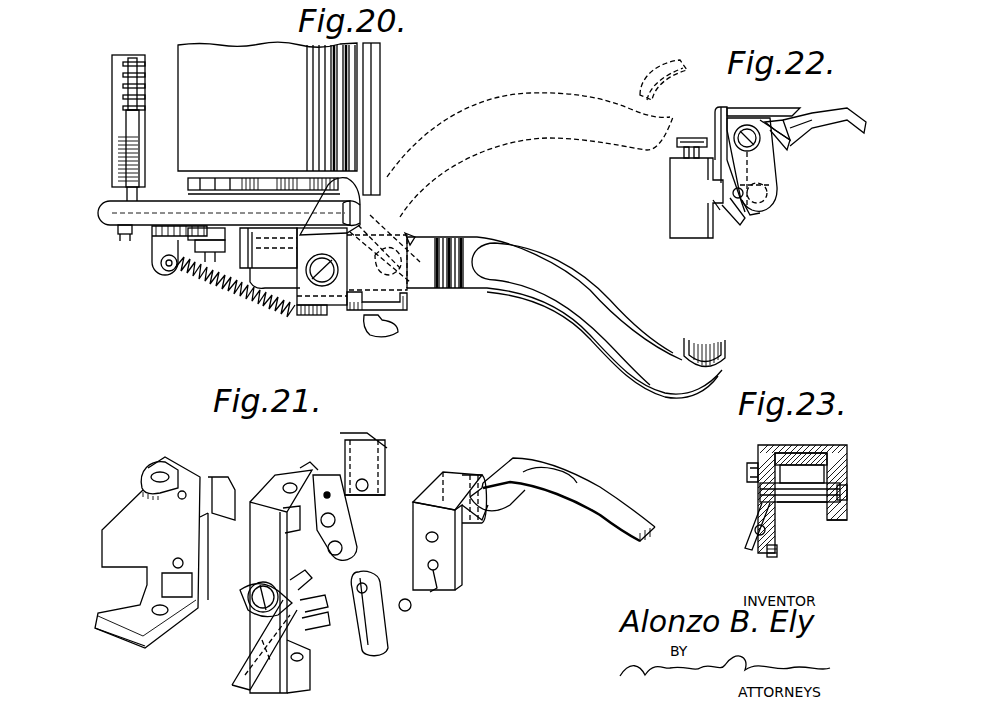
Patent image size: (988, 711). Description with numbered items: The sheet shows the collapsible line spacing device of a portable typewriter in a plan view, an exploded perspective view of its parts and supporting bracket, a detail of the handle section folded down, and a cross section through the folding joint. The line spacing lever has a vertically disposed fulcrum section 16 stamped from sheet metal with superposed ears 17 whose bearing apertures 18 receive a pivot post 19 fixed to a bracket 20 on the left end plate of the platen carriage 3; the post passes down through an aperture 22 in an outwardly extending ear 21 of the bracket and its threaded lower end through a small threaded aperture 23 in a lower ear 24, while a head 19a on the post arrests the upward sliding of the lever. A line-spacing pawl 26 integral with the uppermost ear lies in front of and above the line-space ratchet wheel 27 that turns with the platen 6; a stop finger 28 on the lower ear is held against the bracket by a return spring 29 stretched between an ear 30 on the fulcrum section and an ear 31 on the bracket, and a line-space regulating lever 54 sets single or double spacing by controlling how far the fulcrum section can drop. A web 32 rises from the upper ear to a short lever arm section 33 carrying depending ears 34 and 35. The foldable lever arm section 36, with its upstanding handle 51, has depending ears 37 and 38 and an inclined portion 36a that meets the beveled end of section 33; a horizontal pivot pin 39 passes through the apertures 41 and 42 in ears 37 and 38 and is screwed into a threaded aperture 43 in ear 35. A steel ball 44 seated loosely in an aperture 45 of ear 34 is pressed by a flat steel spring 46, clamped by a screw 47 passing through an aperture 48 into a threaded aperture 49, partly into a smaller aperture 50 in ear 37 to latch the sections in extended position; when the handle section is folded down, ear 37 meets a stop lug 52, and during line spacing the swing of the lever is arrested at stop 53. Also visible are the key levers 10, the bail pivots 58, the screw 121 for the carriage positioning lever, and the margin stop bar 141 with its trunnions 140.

In FIG. 20, the platen carriage 3 is at (363, 97).
In FIG. 20, the platen 6 is at (195, 88).
In FIG. 21, the key lever 10 is at (336, 520).
In FIG. 22, the fulcrum section 16 is at (670, 196).
In FIG. 21, the fulcrum section 16 is at (272, 546).
In FIG. 20, the laterally extending ears 17 is at (310, 308).
In FIG. 21, the laterally extending ears 17 is at (270, 490).
In FIG. 21, the bearing apertures 18 is at (289, 482).
In FIG. 22, the pivot post 19 is at (677, 150).
In FIG. 20, the head 19a is at (341, 312).
In FIG. 22, the head 19a is at (670, 140).
In FIG. 21, the bracket 20 is at (140, 518).
In FIG. 21, the outwardly extending ear 21 is at (174, 460).
In FIG. 21, the aperture 22 is at (152, 472).
In FIG. 22, the small threaded aperture 23 is at (745, 125).
In FIG. 21, the small threaded aperture 23 is at (165, 616).
In FIG. 21, the ear 24 is at (142, 640).
In FIG. 20, the line-spacing pawl 26 is at (352, 193).
In FIG. 20, the line-space ratchet wheel 27 is at (218, 180).
In FIG. 20, the stop finger 28 is at (266, 285).
In FIG. 21, the stop finger 28 is at (250, 620).
In FIG. 20, the return spring 29 is at (233, 300).
In FIG. 21, the ear 30 is at (250, 615).
In FIG. 20, the ear 31 is at (185, 276).
In FIG. 21, the web 32 is at (310, 468).
In FIG. 20, the lever arm section 33 is at (423, 288).
In FIG. 22, the lever arm section 33 is at (778, 110).
In FIG. 21, the lever arm section 33 is at (385, 455).
In FIG. 23, the lever arm section 33 is at (762, 446).
In FIG. 22, the depending ear 34 is at (722, 181).
In FIG. 21, the depending ear 34 is at (356, 540).
In FIG. 23, the depending ear 34 is at (755, 552).
In FIG. 21, the depending ear 35 is at (370, 490).
In FIG. 23, the depending ear 35 is at (840, 520).
In FIG. 20, the foldable lever arm section 36 is at (568, 279).
In FIG. 22, the foldable lever arm section 36 is at (840, 110).
In FIG. 21, the foldable lever arm section 36 is at (433, 470).
In FIG. 23, the foldable lever arm section 36 is at (803, 458).
In FIG. 20, the inclined portion 36a is at (446, 237).
In FIG. 22, the inclined portion 36a is at (815, 128).
In FIG. 21, the inclined portion 36a is at (488, 500).
In FIG. 22, the depending ear 37 is at (740, 213).
In FIG. 21, the depending ear 37 is at (450, 560).
In FIG. 23, the depending ear 37 is at (760, 508).
In FIG. 21, the depending ear 38 is at (480, 520).
In FIG. 23, the depending ear 38 is at (834, 522).
In FIG. 23, the horizontal pivot pin 39 is at (803, 508).
In FIG. 21, the aperture 41 is at (428, 545).
In FIG. 21, the aperture 42 is at (472, 478).
In FIG. 21, the threaded aperture 43 is at (385, 478).
In FIG. 22, the steel ball 44 is at (775, 207).
In FIG. 21, the steel ball 44 is at (408, 611).
In FIG. 23, the steel ball 44 is at (755, 535).
In FIG. 22, the aperture 45 is at (765, 193).
In FIG. 21, the aperture 45 is at (343, 550).
In FIG. 22, the flat steel spring 46 is at (765, 165).
In FIG. 21, the flat steel spring 46 is at (385, 650).
In FIG. 22, the clamping screw 47 is at (790, 122).
In FIG. 23, the clamping screw 47 is at (750, 468).
In FIG. 21, the aperture 48 is at (372, 588).
In FIG. 21, the threaded aperture 49 is at (328, 492).
In FIG. 22, the aperture 50 is at (733, 222).
In FIG. 21, the aperture 50 is at (440, 590).
In FIG. 23, the aperture 50 is at (778, 556).
In FIG. 20, the finger-piece or handle 51 is at (705, 345).
In FIG. 22, the stop lug 52 is at (713, 211).
In FIG. 21, the stop lug 52 is at (305, 595).
In FIG. 20, the stop 53 is at (362, 216).
In FIG. 21, the stop 53 is at (226, 478).
In FIG. 21, the line-space regulating lever 54 is at (275, 610).
In FIG. 20, the pivots 58 is at (161, 267).
In FIG. 20, the screw 121 is at (200, 254).
In FIG. 20, the trunnions 140 is at (118, 228).
In FIG. 20, the margin stop bar 141 is at (124, 55).